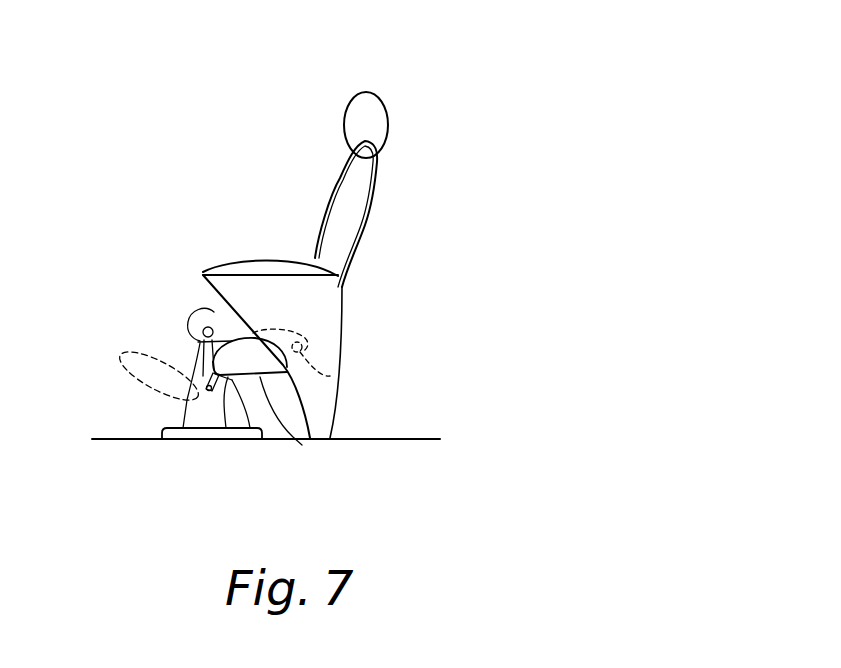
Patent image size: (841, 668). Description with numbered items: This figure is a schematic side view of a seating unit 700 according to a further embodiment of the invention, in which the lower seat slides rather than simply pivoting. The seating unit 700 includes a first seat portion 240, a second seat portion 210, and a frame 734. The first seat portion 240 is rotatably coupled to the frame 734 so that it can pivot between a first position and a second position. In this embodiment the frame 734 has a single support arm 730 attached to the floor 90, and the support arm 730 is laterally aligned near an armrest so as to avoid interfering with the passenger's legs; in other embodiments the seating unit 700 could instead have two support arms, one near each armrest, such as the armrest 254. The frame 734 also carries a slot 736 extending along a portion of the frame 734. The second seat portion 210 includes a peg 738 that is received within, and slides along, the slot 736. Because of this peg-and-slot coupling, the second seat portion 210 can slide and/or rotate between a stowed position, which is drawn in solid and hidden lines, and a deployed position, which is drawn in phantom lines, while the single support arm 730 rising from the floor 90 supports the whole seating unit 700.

The seating unit 700 is at (398, 72).
The armrest 254 is at (287, 262).
The second seat portion 210 is at (283, 439).
The first seat portion 240 is at (213, 312).
The frame 734 is at (210, 352).
The slot 736 is at (248, 439).
The peg 738 is at (330, 376).
The support arm 730 is at (195, 439).
The floor 90 is at (110, 440).